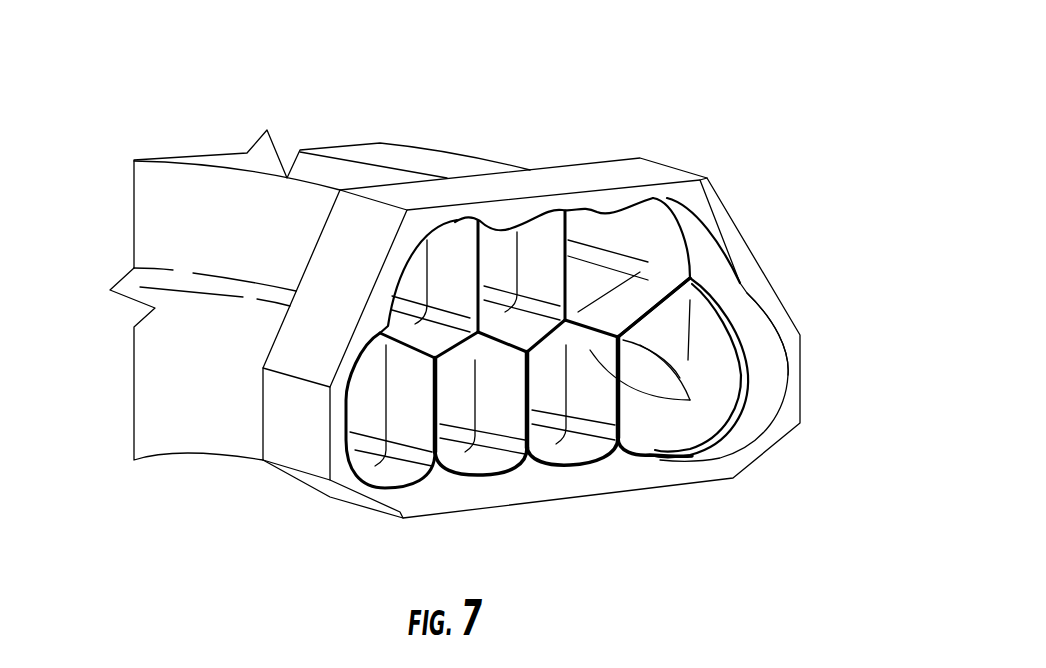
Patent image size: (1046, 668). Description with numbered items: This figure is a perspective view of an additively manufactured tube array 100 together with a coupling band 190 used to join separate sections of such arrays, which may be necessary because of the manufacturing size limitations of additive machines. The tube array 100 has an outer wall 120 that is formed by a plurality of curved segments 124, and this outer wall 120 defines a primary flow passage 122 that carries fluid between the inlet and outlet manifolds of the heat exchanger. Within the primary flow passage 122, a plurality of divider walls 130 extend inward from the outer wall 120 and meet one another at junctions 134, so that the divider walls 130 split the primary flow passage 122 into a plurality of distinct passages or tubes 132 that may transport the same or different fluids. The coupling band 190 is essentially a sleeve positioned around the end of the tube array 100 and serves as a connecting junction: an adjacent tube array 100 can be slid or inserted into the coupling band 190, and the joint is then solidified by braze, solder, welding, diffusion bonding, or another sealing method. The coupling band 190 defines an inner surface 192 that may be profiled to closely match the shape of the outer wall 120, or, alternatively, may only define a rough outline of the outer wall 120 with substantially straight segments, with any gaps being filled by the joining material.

The tube array 100 is at (277, 100).
The outer wall 120 is at (200, 230).
The curved segments 124 is at (168, 424).
The coupling band 190 is at (632, 170).
The primary flow passage 122 is at (650, 266).
The divider walls 130 is at (665, 325).
The tubes 132 is at (692, 391).
The inner surface 192 is at (731, 430).
The junctions 134 is at (655, 318).